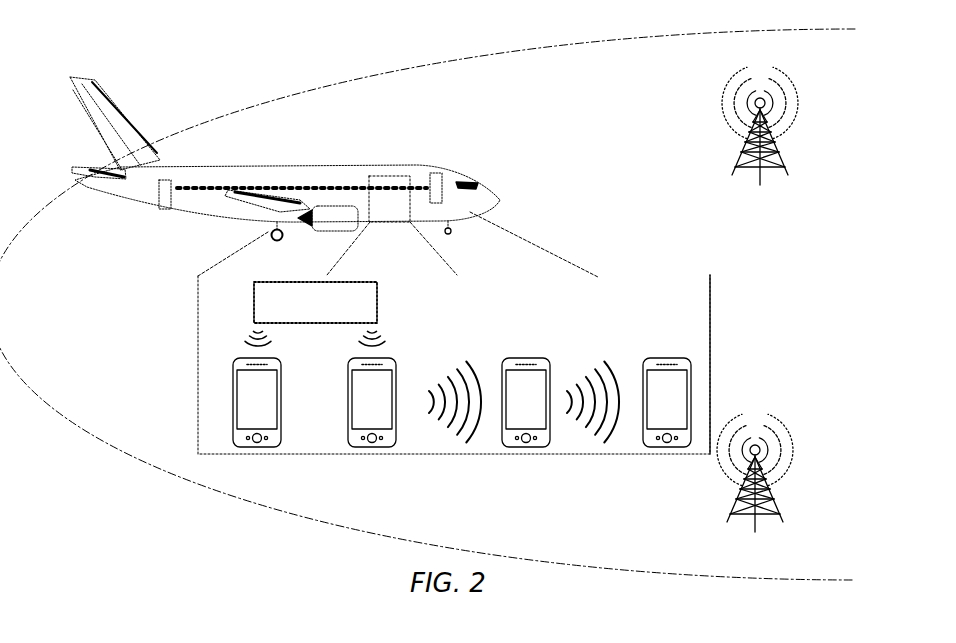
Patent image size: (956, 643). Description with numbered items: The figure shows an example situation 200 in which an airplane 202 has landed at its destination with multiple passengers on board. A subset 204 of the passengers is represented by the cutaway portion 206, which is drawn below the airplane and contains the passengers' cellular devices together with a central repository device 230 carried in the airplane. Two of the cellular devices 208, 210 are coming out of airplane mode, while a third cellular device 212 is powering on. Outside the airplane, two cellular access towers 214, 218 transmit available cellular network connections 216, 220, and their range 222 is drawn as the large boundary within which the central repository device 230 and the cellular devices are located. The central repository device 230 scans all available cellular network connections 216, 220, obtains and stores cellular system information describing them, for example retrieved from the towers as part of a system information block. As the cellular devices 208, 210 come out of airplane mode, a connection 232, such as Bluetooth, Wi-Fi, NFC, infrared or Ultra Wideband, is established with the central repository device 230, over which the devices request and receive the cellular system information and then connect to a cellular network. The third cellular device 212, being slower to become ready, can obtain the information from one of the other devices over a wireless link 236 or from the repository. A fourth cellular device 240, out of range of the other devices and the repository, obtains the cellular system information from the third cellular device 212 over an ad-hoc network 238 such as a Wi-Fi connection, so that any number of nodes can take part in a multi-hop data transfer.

The example situation 200 is at (636, 87).
The airplane 202 is at (308, 160).
The subset of passengers 204 is at (407, 178).
The cutaway portion 206 is at (713, 303).
The cellular device 208 is at (257, 402).
The cellular device 210 is at (372, 402).
The third cellular device 212 is at (541, 410).
The cellular access tower 214 is at (797, 170).
The cellular network connection 216 is at (790, 85).
The cellular access tower 218 is at (793, 520).
The cellular network connection 220 is at (788, 433).
The range 222 is at (226, 110).
The central repository device 230 is at (378, 300).
The connection 232 is at (240, 337).
The wireless signal 236 is at (478, 447).
The ad-hoc network 238 is at (618, 447).
The fourth cellular device 240 is at (682, 410).